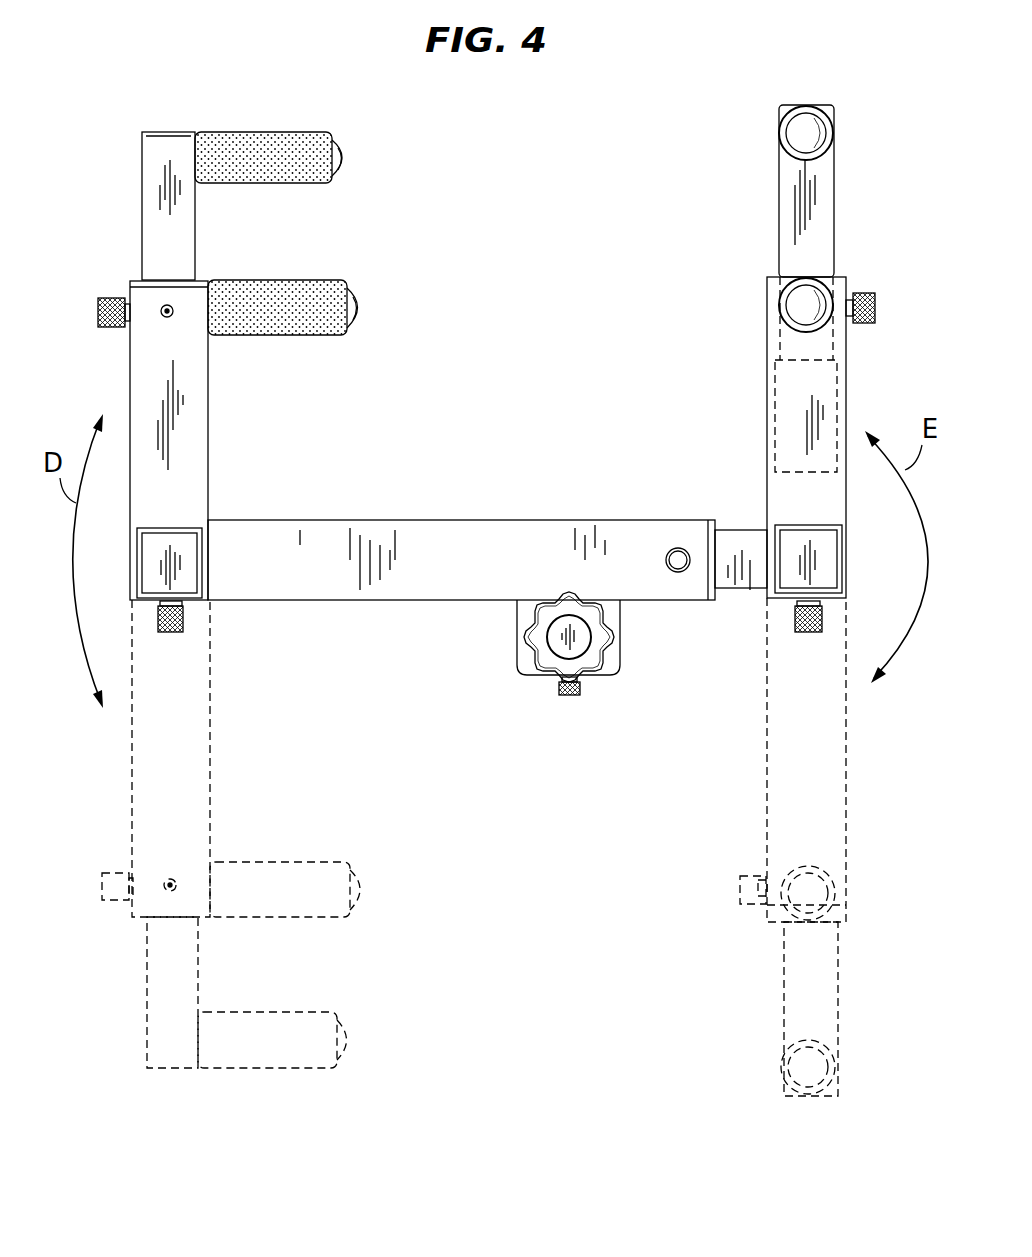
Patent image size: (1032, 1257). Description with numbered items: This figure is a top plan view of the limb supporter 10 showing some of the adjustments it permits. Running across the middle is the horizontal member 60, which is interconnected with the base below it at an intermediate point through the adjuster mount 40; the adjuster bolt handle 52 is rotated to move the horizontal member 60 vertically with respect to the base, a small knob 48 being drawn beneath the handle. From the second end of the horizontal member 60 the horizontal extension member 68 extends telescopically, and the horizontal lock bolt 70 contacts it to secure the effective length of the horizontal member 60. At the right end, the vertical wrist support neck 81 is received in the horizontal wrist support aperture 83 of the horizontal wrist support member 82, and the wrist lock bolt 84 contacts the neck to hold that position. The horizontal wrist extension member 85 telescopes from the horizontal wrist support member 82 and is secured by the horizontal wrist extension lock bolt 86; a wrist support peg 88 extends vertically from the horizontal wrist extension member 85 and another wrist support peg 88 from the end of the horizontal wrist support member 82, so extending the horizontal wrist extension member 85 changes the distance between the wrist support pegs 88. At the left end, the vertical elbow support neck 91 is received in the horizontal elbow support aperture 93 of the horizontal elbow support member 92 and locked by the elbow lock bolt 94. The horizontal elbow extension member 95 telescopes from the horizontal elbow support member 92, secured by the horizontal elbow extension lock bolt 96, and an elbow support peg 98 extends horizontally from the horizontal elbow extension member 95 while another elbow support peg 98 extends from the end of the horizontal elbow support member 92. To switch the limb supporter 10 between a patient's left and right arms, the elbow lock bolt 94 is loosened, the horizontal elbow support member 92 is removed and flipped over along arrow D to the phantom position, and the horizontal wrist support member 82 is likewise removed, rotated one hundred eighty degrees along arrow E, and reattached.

The limb supporter 10 is at (530, 394).
The adjuster mount 40 is at (522, 672).
The clamp screw 48 is at (582, 690).
The adjuster bolt handle 52 is at (604, 628).
The horizontal member 60 is at (312, 570).
The horizontal extension member 68 is at (738, 538).
The horizontal lock bolt 70 is at (678, 548).
The vertical wrist support neck 81 is at (828, 548).
The horizontal wrist support member 82 is at (842, 786).
The horizontal wrist support aperture 83 is at (840, 574).
The wrist lock bolt 84 is at (822, 622).
The horizontal wrist extension member 85 is at (818, 212).
The horizontal wrist extension lock bolt 86 is at (875, 310).
The wrist support peg 88 is at (832, 140).
The vertical elbow support neck 91 is at (152, 566).
The horizontal elbow support member 92 is at (198, 431).
The horizontal elbow support aperture 93 is at (204, 575).
The elbow lock bolt 94 is at (170, 634).
The horizontal elbow extension member 95 is at (162, 237).
The horizontal elbow extension lock bolt 96 is at (98, 312).
The elbow support peg 98 is at (350, 160).